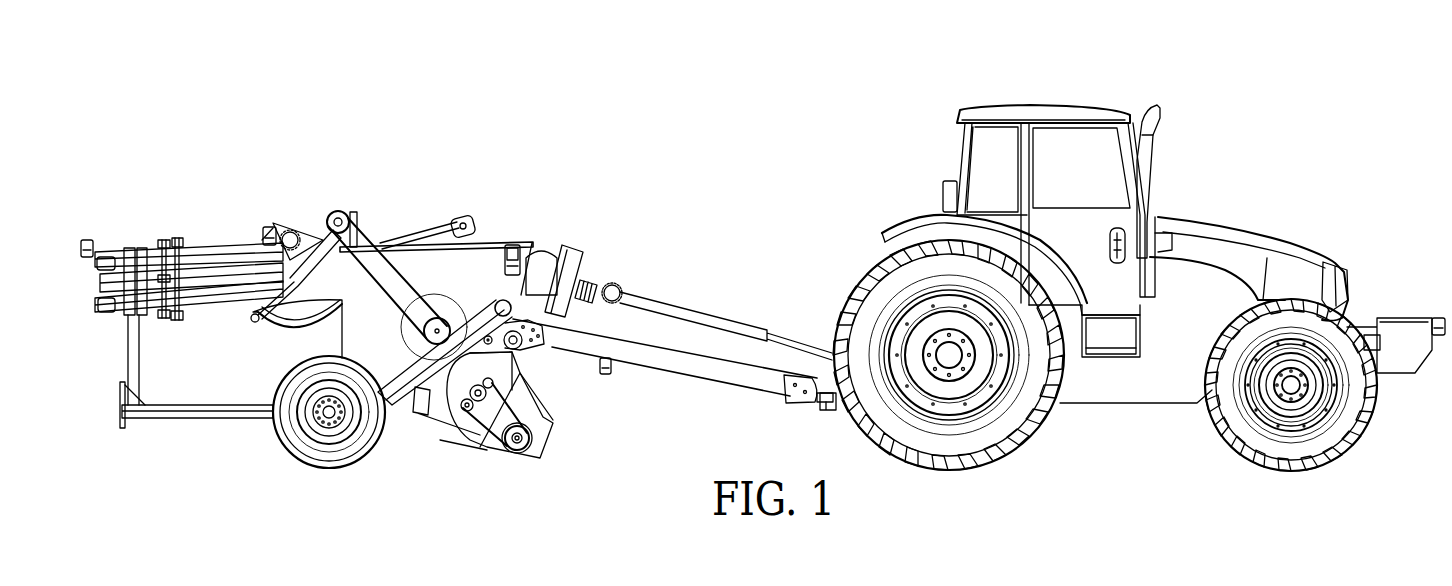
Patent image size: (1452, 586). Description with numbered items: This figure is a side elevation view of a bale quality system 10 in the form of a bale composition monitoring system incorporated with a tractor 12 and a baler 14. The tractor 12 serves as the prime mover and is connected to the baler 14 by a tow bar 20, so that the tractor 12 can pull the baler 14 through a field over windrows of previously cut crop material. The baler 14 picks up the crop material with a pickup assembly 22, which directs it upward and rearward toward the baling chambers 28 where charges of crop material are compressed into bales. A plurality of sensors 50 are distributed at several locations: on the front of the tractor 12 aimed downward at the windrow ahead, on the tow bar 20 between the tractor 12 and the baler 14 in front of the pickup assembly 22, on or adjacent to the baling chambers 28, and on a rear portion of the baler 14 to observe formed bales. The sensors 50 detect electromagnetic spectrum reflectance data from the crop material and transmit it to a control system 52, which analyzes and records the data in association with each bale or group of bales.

The bale quality system 10 is at (745, 85).
The tractor 12 is at (1266, 112).
The baler 14 is at (506, 140).
The tow bar 20 is at (693, 365).
The pickup assembly 22 is at (501, 484).
The baling chambers 28 is at (203, 262).
The sensors 50 is at (90, 242).
The control system 52 is at (535, 242).